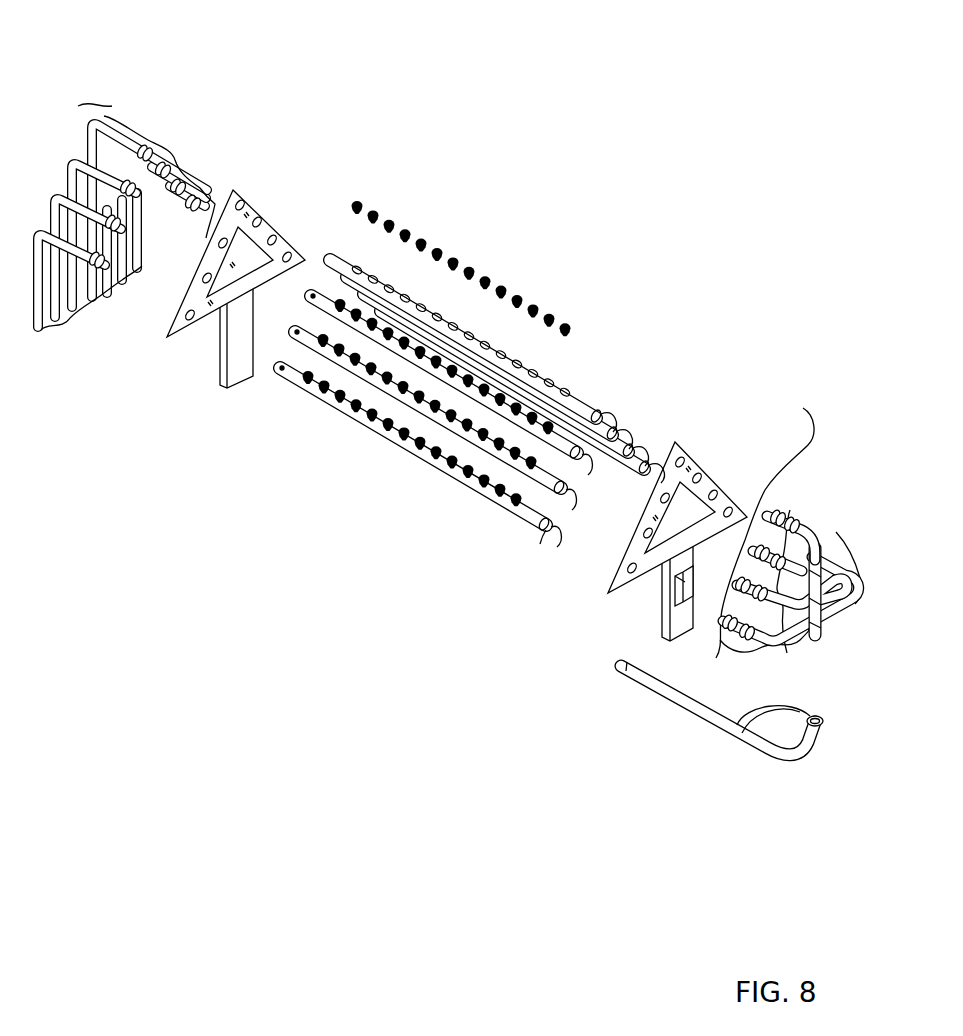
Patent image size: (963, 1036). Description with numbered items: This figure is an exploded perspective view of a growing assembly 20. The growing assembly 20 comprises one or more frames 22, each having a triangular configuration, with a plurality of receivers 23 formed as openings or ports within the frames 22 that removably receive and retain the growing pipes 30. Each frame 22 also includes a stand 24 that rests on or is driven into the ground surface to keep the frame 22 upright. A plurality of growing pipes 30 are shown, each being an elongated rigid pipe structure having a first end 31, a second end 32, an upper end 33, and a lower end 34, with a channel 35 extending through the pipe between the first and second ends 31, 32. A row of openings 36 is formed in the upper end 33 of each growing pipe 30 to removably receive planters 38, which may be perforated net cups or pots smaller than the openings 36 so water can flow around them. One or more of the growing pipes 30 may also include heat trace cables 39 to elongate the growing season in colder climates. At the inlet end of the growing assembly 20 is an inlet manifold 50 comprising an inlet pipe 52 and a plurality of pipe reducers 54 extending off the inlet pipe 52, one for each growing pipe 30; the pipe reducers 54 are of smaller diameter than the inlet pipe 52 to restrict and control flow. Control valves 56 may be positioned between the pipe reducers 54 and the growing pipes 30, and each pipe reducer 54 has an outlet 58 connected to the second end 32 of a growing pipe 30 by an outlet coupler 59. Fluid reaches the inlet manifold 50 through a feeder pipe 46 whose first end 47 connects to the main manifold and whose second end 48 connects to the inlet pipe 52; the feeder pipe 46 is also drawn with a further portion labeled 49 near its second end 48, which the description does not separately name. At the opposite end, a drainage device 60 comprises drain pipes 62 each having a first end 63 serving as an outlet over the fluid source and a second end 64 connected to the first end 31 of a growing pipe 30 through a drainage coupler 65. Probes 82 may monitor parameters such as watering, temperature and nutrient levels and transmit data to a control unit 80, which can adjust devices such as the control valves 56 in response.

The growing assembly 20 is at (536, 200).
The frame 22 is at (464, 412).
The receiver 23 is at (283, 240).
The stand 24 is at (223, 360).
The growing pipe 30 is at (422, 423).
The first end 31 is at (279, 378).
The second end 32 is at (550, 540).
The upper end 33 is at (463, 470).
The lower end 34 is at (337, 412).
The channel 35 is at (550, 524).
The opening 36 is at (520, 362).
The planter 38 is at (396, 207).
The heat trace cable 39 is at (553, 545).
The feeder pipe 46 is at (652, 725).
The first end 47 is at (618, 660).
The second end 48 is at (738, 724).
The tube outlet 49 is at (774, 757).
The inlet manifold 50 is at (768, 525).
The inlet pipe 52 is at (808, 633).
The pipe reducer 54 is at (778, 650).
The control valve 56 is at (778, 589).
The outlet 58 is at (765, 527).
The outlet coupler 59 is at (720, 642).
The drainage device 60 is at (129, 214).
The drain pipe 62 is at (66, 400).
The first end 63 is at (78, 390).
The second end 64 is at (170, 158).
The drainage coupler 65 is at (202, 236).
The control unit 80 is at (676, 590).
The probe 82 is at (279, 380).